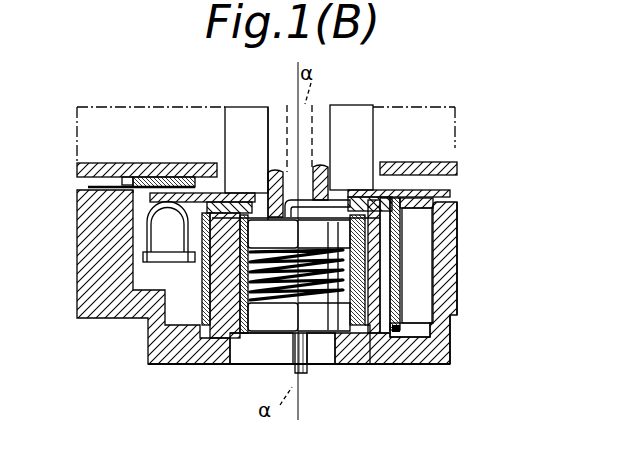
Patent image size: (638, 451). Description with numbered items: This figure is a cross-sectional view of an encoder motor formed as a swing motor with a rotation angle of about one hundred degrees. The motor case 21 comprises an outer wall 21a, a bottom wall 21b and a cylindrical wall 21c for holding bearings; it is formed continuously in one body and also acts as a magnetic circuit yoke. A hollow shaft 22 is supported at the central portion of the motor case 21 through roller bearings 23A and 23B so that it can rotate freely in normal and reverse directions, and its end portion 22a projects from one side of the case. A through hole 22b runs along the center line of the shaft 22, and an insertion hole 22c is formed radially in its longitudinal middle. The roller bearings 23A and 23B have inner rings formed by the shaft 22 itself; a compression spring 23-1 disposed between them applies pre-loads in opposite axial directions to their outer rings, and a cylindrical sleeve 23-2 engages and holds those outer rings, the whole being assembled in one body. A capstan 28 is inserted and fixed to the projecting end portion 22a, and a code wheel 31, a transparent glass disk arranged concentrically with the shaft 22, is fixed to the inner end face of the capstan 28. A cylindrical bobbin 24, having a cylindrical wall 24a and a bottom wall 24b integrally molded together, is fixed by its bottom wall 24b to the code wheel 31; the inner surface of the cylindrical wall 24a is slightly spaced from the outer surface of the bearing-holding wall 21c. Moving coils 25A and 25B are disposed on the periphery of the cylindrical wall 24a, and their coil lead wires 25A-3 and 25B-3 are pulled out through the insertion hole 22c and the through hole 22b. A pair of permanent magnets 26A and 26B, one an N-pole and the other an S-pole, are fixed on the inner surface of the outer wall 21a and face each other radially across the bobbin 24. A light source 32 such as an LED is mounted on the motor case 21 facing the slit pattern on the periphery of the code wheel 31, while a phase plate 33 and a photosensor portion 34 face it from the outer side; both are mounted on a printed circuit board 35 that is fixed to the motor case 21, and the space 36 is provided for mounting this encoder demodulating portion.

The motor case 21 is at (461, 256).
The outer wall 21a is at (453, 270).
The bottom wall 21b is at (440, 366).
The cylindrical wall 21c is at (422, 307).
The shaft 22 is at (338, 112).
The end portion 22a is at (322, 137).
The through hole 22b is at (291, 105).
The insertion hole 22c is at (380, 192).
The compression spring 23-1 is at (353, 326).
The sleeve 23-2 is at (364, 326).
The roller bearing 23A is at (299, 260).
The roller bearing 23B is at (299, 317).
The bobbin 24 is at (383, 173).
The cylindrical wall 24a is at (402, 240).
The bottom wall 24b is at (388, 200).
The moving coil 25A is at (196, 333).
The coil lead wire 25A-3 is at (295, 338).
The moving coil 25B is at (432, 350).
The coil lead wire 25B-3 is at (327, 368).
The magnet 26A is at (206, 269).
The magnet 26B is at (410, 328).
The capstan 28 is at (222, 118).
The code wheel 31 is at (168, 235).
The light source 32 is at (130, 248).
The phase plate 33 is at (90, 183).
The photosensor portion 34 is at (148, 163).
The printed circuit board 35 is at (160, 162).
The space 36 is at (133, 126).